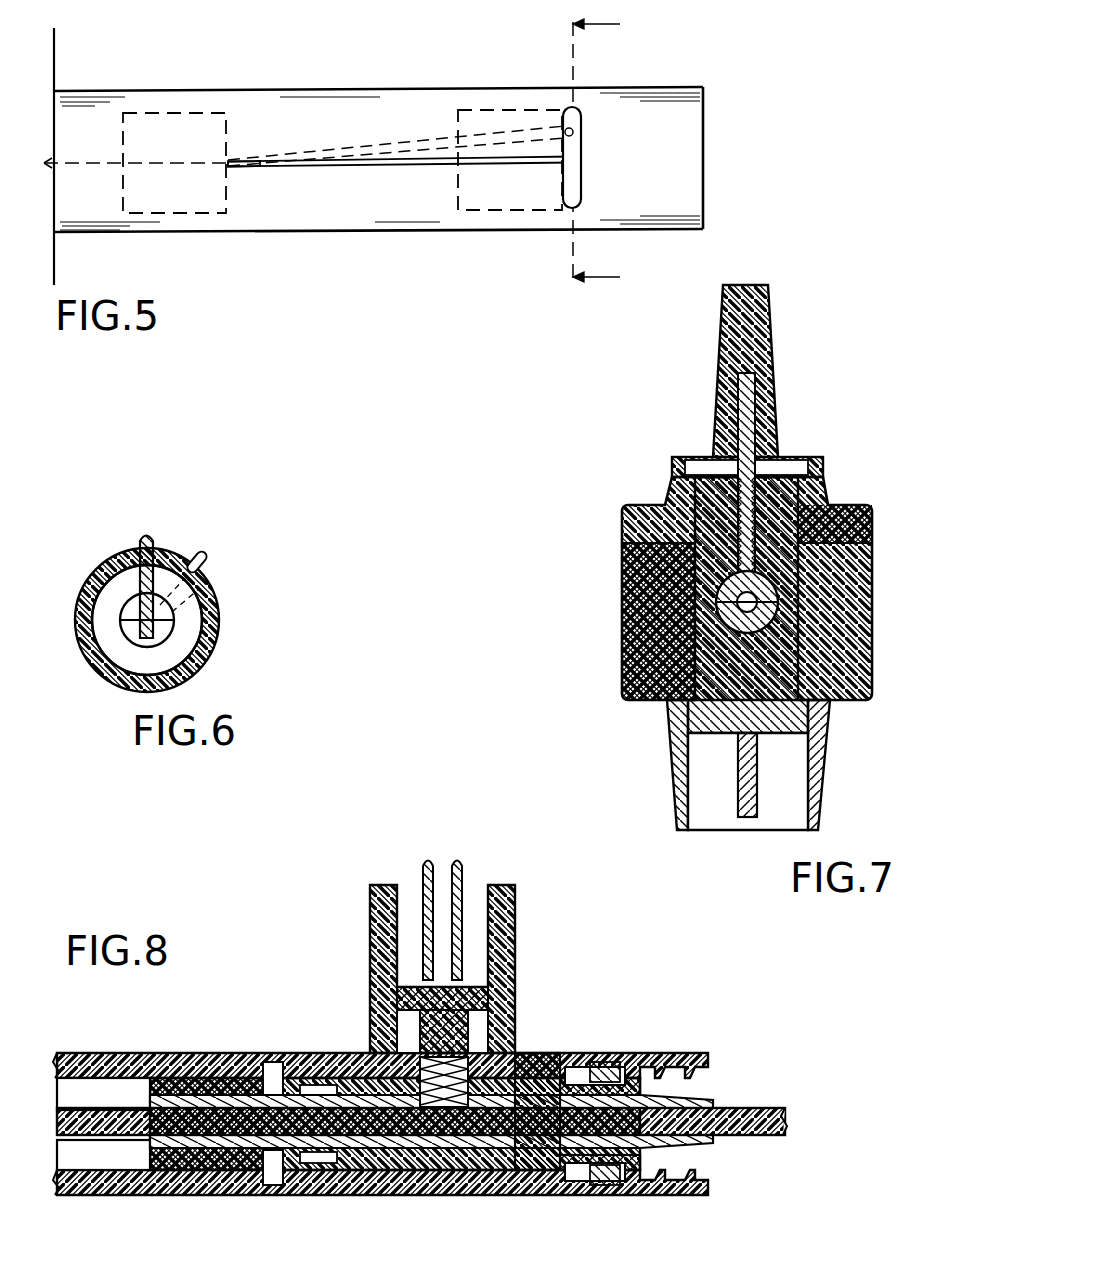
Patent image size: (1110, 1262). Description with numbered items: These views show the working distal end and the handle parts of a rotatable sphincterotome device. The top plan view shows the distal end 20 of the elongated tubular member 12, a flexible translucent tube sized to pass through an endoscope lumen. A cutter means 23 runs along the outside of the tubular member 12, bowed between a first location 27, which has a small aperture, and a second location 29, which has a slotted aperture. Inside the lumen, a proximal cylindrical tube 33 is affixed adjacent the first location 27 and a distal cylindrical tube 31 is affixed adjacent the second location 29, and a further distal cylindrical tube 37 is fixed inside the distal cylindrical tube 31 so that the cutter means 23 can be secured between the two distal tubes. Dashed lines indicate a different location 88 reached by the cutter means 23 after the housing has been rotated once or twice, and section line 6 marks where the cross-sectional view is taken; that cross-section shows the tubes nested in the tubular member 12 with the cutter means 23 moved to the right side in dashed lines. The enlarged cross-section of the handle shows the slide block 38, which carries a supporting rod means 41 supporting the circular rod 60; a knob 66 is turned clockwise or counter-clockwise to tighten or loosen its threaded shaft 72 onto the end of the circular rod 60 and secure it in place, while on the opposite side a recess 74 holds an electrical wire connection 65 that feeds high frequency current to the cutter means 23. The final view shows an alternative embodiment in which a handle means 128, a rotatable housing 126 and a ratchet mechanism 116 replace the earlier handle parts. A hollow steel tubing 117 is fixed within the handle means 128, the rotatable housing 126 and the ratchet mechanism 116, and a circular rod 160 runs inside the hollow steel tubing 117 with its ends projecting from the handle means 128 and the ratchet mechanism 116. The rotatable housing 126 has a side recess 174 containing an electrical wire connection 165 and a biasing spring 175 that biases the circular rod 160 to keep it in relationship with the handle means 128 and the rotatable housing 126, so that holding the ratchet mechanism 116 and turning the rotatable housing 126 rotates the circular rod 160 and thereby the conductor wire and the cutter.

In FIG. 5, the distal end 20 is at (448, 64).
In FIG. 5, the tubular member 12 is at (297, 228).
In FIG. 6, the tubular member 12 is at (217, 630).
In FIG. 5, the cutter means 23 is at (379, 168).
In FIG. 6, the cutter means 23 is at (143, 535).
In FIG. 5, the first location 27 is at (232, 160).
In FIG. 5, the different location 88 is at (388, 145).
In FIG. 5, the second location 29 is at (575, 108).
In FIG. 5, the distal cylindrical tube 31 is at (510, 210).
In FIG. 6, the distal cylindrical tube 31 is at (122, 588).
In FIG. 5, the proximal cylindrical tube 33 is at (183, 205).
In FIG. 5, the section line 6— 6 is at (608, 152).
In FIG. 6, the distal cylindrical tube 37 is at (132, 633).
In FIG. 7, the knob 66 is at (777, 387).
In FIG. 7, the threaded shaft 72 is at (727, 465).
In FIG. 7, the supporting rod means 41 is at (727, 610).
In FIG. 7, the slide block 38 is at (707, 648).
In FIG. 7, the circular rod 60 is at (840, 592).
In FIG. 7, the electrical wire connection 65 is at (755, 797).
In FIG. 7, the recess 74 is at (690, 800).
In FIG. 8, the handle means 128 is at (125, 1052).
In FIG. 8, the rotatable housing 126 is at (477, 1195).
In FIG. 8, the hollow steel tubing 117 is at (187, 1093).
In FIG. 8, the side recess 174 is at (397, 902).
In FIG. 8, the electrical wire connection 165 is at (452, 867).
In FIG. 8, the biasing spring 175 is at (505, 1068).
In FIG. 8, the ratchet mechanism 116 is at (653, 1052).
In FIG. 8, the circular rod 160 is at (747, 1132).